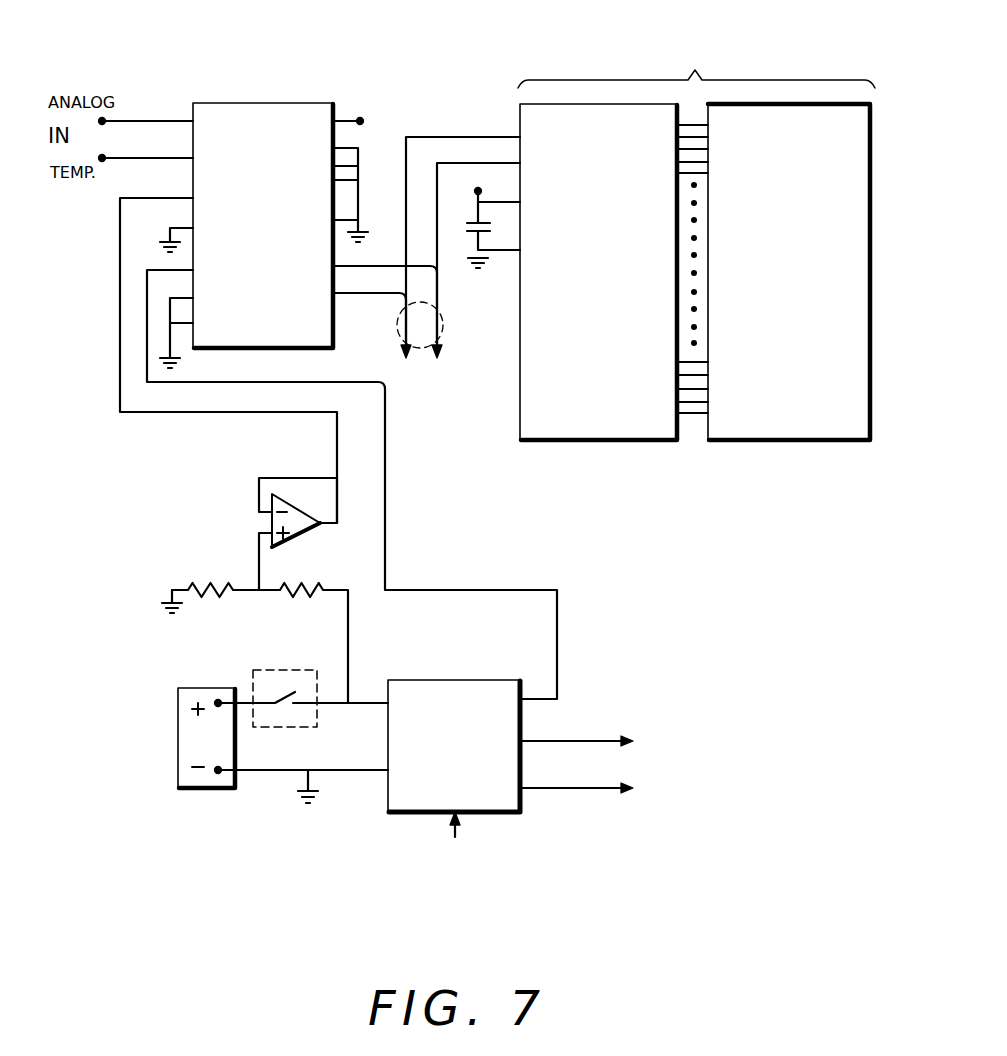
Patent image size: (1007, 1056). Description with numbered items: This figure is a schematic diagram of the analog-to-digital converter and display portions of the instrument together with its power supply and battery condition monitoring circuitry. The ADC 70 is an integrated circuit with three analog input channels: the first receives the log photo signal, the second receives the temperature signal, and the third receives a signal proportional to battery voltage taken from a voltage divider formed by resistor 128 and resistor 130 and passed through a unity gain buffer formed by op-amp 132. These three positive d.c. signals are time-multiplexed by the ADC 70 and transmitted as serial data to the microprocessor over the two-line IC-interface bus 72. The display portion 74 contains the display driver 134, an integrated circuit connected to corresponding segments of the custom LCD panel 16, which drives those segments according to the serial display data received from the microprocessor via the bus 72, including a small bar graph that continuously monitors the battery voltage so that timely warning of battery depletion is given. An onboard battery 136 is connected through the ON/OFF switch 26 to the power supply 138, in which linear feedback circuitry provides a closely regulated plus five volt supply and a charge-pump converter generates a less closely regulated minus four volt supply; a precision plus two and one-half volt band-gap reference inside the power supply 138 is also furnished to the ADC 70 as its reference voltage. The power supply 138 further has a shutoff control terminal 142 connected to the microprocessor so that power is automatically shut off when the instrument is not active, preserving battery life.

The ADC 70 is at (277, 103).
The IC-interface bus 72 is at (453, 334).
The display portion 74 is at (696, 230).
The display driver 134 is at (622, 444).
The LCD panel 16 is at (790, 445).
The op-amp 132 is at (295, 540).
The resistor 128 is at (215, 583).
The resistor 130 is at (303, 602).
The ON/OFF switch 26 is at (280, 670).
The battery 136 is at (178, 745).
The power supply 138 is at (458, 680).
The shutoff control terminal 142 is at (453, 830).